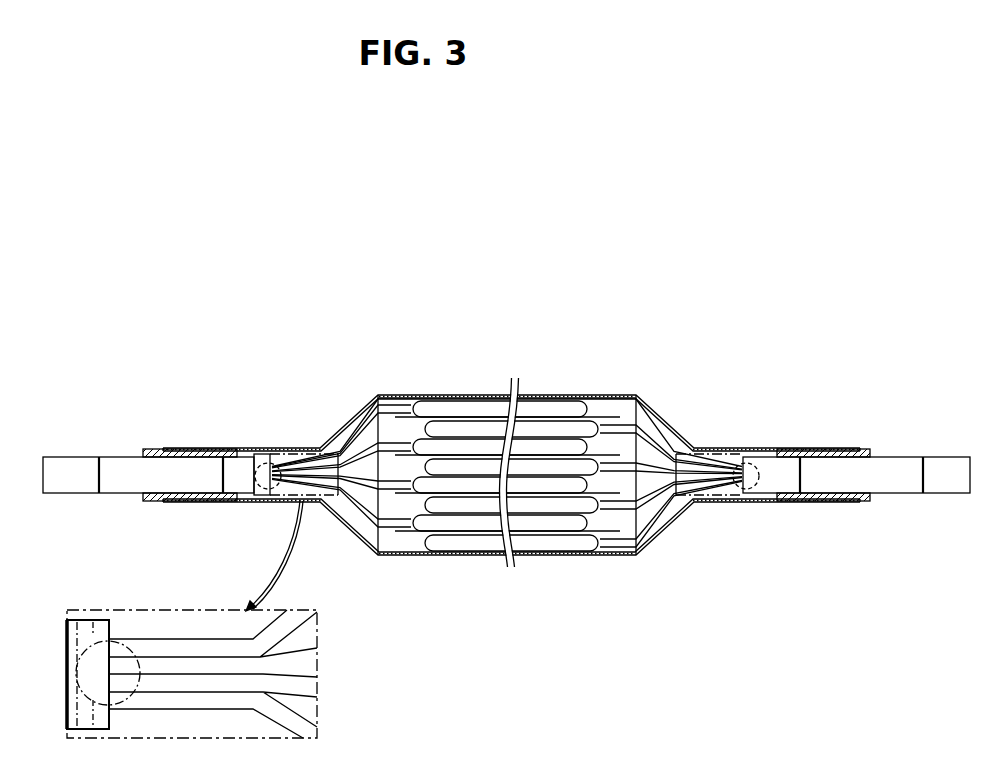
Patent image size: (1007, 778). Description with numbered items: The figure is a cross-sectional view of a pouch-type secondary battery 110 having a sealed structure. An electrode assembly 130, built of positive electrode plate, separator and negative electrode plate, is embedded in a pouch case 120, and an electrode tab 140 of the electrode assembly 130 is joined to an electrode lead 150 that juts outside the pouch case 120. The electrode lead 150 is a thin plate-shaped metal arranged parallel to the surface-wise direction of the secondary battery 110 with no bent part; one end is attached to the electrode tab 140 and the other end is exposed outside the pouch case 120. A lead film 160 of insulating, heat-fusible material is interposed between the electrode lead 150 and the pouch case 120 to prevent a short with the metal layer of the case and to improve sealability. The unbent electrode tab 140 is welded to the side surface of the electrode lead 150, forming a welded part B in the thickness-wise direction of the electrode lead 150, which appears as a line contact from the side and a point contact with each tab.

The secondary battery 110 is at (210, 297).
The pouch case 120 is at (565, 395).
The electrode assembly 130 is at (383, 360).
The electrode tab 140 is at (309, 487).
The electrode lead 150 is at (62, 457).
The lead film 160 is at (147, 449).
The welded part B is at (265, 454).